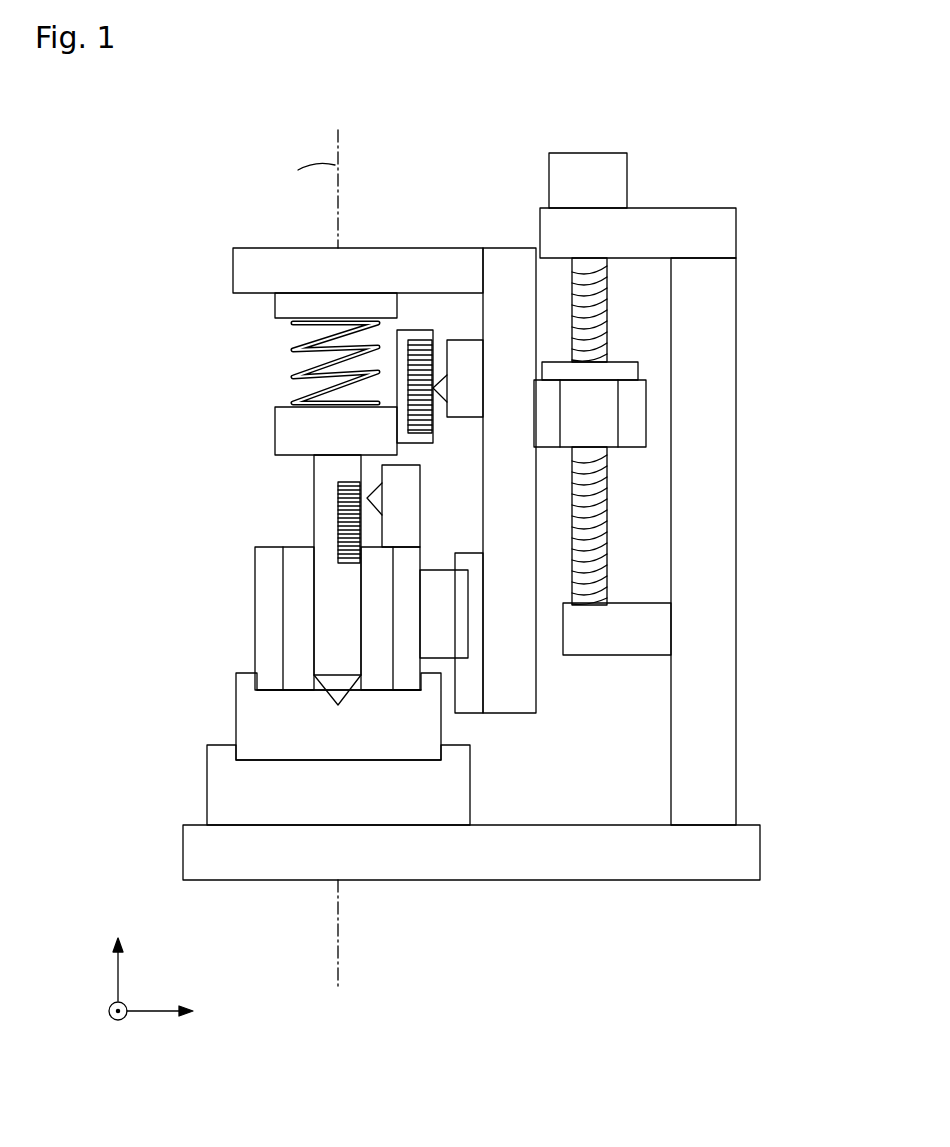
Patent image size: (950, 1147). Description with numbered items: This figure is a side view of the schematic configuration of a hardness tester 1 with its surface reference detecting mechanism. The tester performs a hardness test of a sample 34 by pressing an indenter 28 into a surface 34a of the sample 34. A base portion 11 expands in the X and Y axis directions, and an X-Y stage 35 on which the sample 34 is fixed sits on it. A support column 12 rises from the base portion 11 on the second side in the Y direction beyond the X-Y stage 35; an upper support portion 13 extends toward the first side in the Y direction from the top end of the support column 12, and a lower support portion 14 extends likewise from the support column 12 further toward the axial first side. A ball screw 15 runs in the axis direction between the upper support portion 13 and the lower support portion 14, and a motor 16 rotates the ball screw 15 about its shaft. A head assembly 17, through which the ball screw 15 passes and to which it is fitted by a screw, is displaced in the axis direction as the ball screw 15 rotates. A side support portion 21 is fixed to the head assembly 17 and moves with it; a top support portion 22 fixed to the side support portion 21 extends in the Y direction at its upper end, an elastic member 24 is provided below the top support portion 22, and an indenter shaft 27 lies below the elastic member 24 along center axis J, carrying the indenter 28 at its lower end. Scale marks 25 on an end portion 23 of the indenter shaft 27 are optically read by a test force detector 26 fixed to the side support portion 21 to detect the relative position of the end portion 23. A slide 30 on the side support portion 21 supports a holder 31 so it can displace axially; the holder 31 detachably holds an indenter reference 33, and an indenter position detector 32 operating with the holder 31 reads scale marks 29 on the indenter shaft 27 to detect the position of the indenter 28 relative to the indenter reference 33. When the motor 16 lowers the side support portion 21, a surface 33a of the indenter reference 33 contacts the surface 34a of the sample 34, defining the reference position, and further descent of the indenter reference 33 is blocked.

The hardness tester 1 is at (772, 144).
The base portion 11 is at (752, 848).
The support column 12 is at (722, 552).
The upper support portion 13 is at (720, 238).
The lower support portion 14 is at (653, 622).
The ball screw 15 is at (595, 305).
The motor 16 is at (592, 170).
The head assembly 17 is at (593, 410).
The side support portion 21 is at (505, 262).
The top support portion 22 is at (250, 273).
The end portion 23 is at (297, 432).
The elastic member 24 is at (293, 368).
The scale marks 25 is at (422, 355).
The test force detector 26 is at (433, 386).
The indenter shaft 27 is at (327, 528).
The indenter 28 is at (333, 683).
The scale marks 29 is at (343, 493).
The slide 30 is at (470, 678).
The holder 31 is at (448, 620).
The indenter position detector 32 is at (383, 492).
The indenter reference 33 is at (265, 580).
The surface 33a is at (410, 692).
The sample 34 is at (257, 728).
The surface 34a is at (270, 690).
The X-Y stage 35 is at (228, 808).